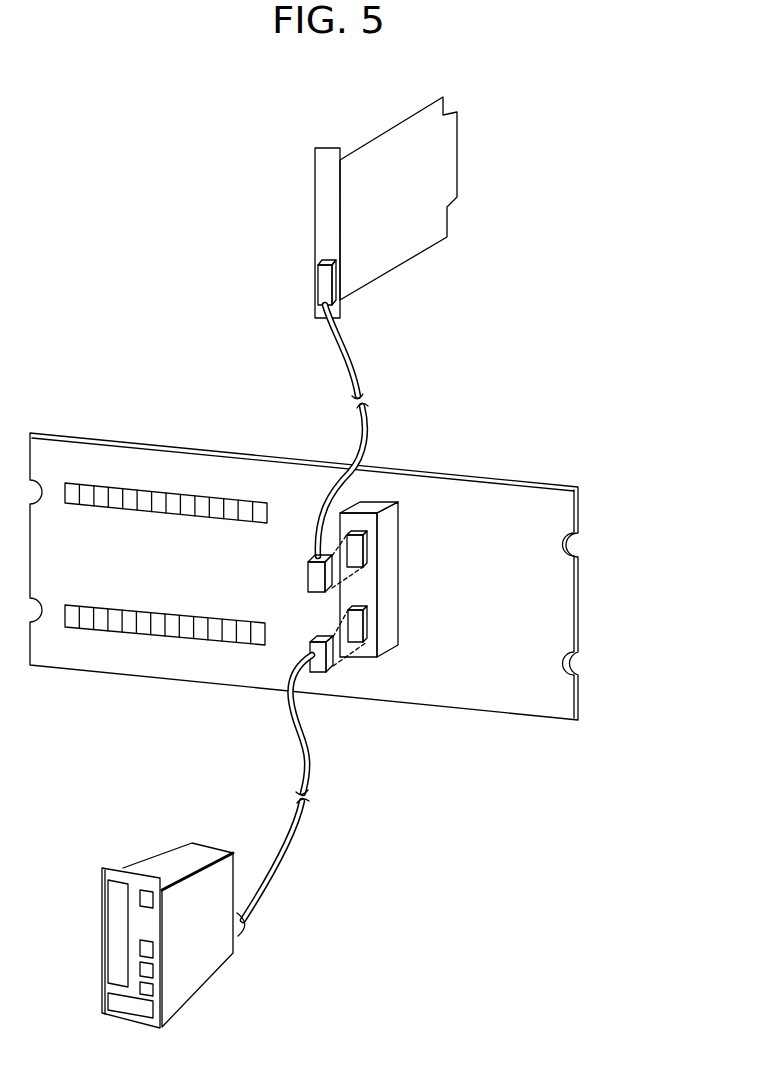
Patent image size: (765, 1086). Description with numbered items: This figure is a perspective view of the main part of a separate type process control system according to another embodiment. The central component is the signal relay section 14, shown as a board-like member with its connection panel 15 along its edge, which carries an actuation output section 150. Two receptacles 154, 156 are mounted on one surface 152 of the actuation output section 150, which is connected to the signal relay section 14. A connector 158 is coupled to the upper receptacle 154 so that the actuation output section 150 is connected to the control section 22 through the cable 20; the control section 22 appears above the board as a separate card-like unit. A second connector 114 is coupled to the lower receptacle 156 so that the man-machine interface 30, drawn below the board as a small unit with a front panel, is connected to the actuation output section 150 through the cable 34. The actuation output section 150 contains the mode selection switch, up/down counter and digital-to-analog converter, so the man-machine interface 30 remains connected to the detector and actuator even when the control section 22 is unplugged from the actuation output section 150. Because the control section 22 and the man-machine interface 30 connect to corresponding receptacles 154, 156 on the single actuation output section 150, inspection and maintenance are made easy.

The signal relay section 14 is at (585, 581).
The connection panel 15 is at (492, 481).
The cable 20 is at (348, 364).
The control section 22 is at (410, 242).
The man-machine interface 30 is at (163, 859).
The cable 34 is at (298, 818).
The connector 114 is at (312, 655).
The actuation output section 150 is at (388, 579).
The surface 152 is at (372, 585).
The receptacle 154 is at (358, 558).
The receptacle 156 is at (360, 633).
The connector 158 is at (312, 582).